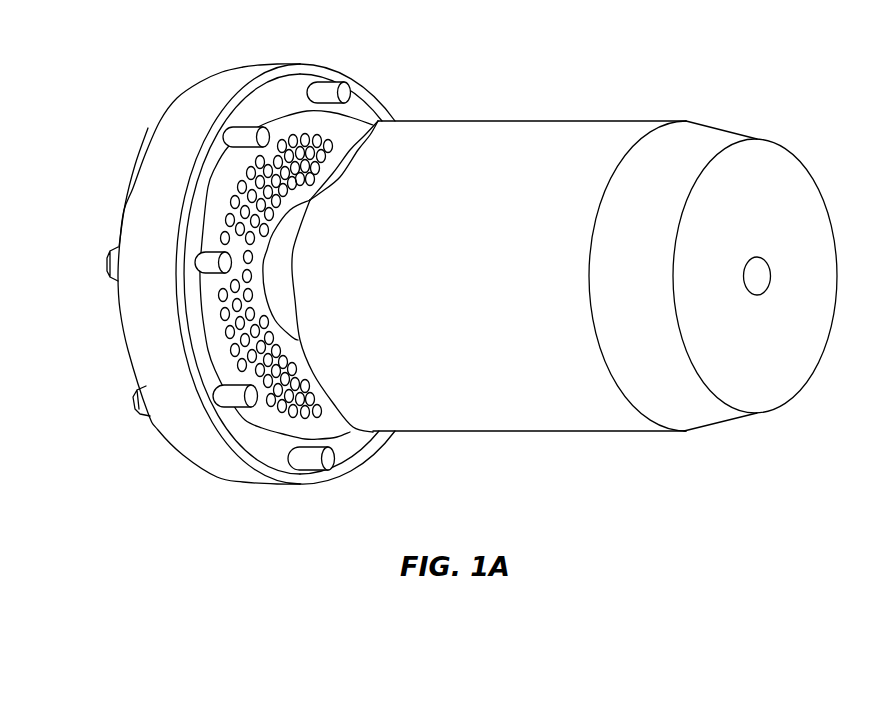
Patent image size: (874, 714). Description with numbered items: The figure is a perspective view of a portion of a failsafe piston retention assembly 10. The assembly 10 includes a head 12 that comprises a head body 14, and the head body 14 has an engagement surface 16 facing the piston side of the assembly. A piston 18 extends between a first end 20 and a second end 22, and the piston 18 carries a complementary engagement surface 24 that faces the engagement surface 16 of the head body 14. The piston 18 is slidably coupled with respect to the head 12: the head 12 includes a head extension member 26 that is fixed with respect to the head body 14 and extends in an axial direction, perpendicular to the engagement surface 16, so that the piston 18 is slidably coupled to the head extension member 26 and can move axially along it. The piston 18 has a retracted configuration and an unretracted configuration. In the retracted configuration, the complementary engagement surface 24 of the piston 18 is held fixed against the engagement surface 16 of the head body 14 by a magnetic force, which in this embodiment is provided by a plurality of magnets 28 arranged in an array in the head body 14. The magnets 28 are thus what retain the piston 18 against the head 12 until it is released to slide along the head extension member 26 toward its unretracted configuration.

The failsafe piston retention assembly 10 is at (568, 58).
The head 12 is at (266, 65).
The head body 14 is at (208, 87).
The engagement surface 16 is at (228, 177).
The piston 18 is at (619, 120).
The first end 20 is at (377, 122).
The second end 22 is at (757, 170).
The complementary engagement surface 24 is at (291, 290).
The head extension member 26 is at (283, 318).
The magnets 28 is at (218, 238).